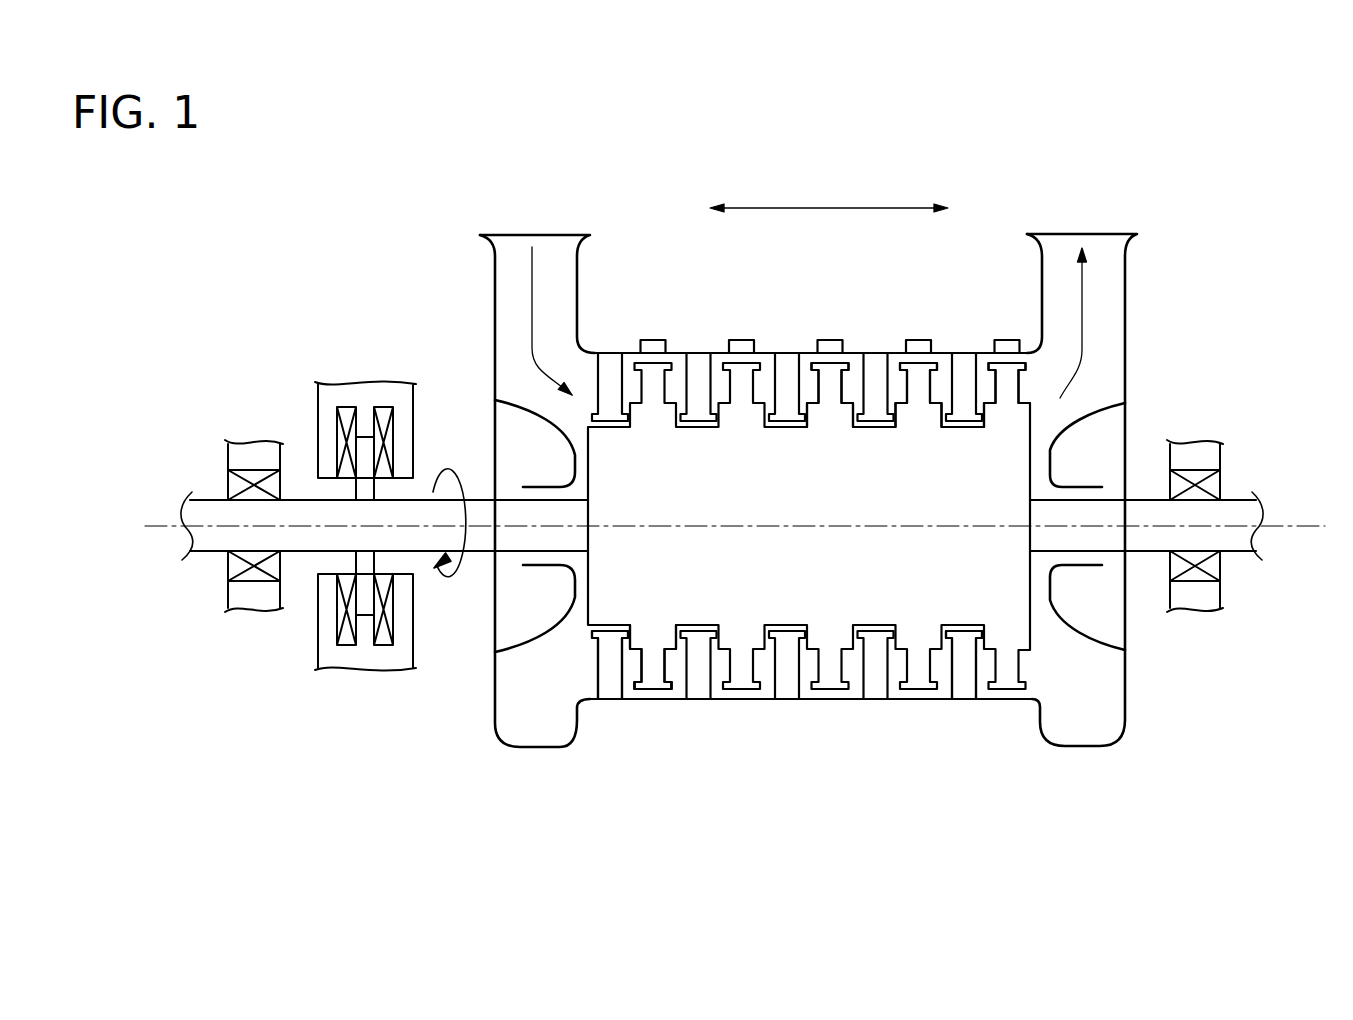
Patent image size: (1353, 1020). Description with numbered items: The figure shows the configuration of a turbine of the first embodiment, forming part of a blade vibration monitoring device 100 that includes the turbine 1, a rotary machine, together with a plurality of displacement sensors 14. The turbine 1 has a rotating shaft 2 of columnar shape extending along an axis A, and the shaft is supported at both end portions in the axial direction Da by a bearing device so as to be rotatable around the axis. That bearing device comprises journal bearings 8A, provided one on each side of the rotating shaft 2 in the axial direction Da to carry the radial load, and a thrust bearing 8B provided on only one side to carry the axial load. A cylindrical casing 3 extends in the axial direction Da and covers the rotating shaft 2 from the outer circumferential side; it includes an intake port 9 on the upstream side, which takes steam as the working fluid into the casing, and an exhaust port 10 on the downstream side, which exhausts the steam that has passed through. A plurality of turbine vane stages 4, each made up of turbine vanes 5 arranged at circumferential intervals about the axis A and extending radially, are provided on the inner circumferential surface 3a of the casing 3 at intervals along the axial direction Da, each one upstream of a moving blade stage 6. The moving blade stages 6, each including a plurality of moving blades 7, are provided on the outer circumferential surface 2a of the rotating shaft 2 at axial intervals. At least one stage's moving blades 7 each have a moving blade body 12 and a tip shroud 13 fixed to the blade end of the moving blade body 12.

The blade vibration monitoring device 100 is at (1235, 110).
The turbine 1 is at (1108, 204).
The rotating shaft 2 is at (617, 578).
The outer circumferential surface 2a is at (673, 650).
The casing 3 is at (828, 700).
The inner circumferential surface 3a is at (961, 694).
The turbine vane stage 4 is at (787, 487).
The turbine vane 5 is at (787, 378).
The moving blade stage 6 is at (918, 341).
The moving blade 7 is at (1005, 388).
The journal bearing 8A is at (252, 405).
The thrust bearing 8B is at (370, 350).
The intake port 9 is at (578, 282).
The exhaust port 10 is at (1125, 282).
The moving blade body 12 is at (637, 676).
The shroud 13 is at (655, 690).
The displacement sensor 14 is at (1007, 346).
The axis A is at (1228, 526).
The axial direction Da is at (829, 192).